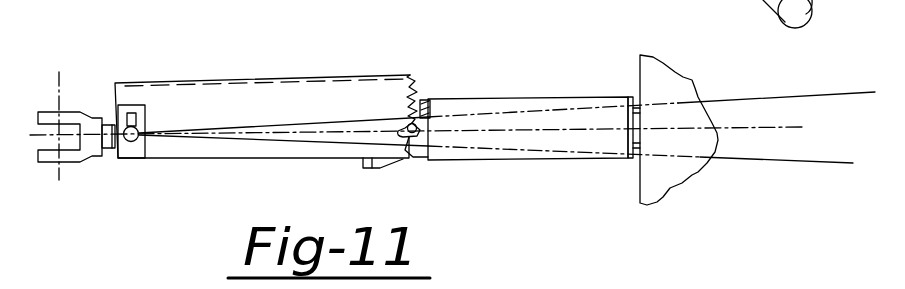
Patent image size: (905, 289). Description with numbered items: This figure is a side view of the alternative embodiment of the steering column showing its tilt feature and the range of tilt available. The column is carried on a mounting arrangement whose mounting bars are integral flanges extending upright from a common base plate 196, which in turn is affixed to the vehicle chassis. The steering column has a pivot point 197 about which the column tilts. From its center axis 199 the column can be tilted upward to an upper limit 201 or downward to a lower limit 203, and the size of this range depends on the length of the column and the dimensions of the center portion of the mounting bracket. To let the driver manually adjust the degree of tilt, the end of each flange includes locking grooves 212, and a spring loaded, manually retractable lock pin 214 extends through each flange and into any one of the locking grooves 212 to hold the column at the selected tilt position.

The common base plate 196 is at (292, 28).
The pivot point 197 is at (133, 143).
The center axis 199 is at (457, 137).
The upper limit 201 is at (541, 107).
The lower limit 203 is at (533, 152).
The locking grooves 212 is at (407, 77).
The lock pin 214 is at (432, 127).